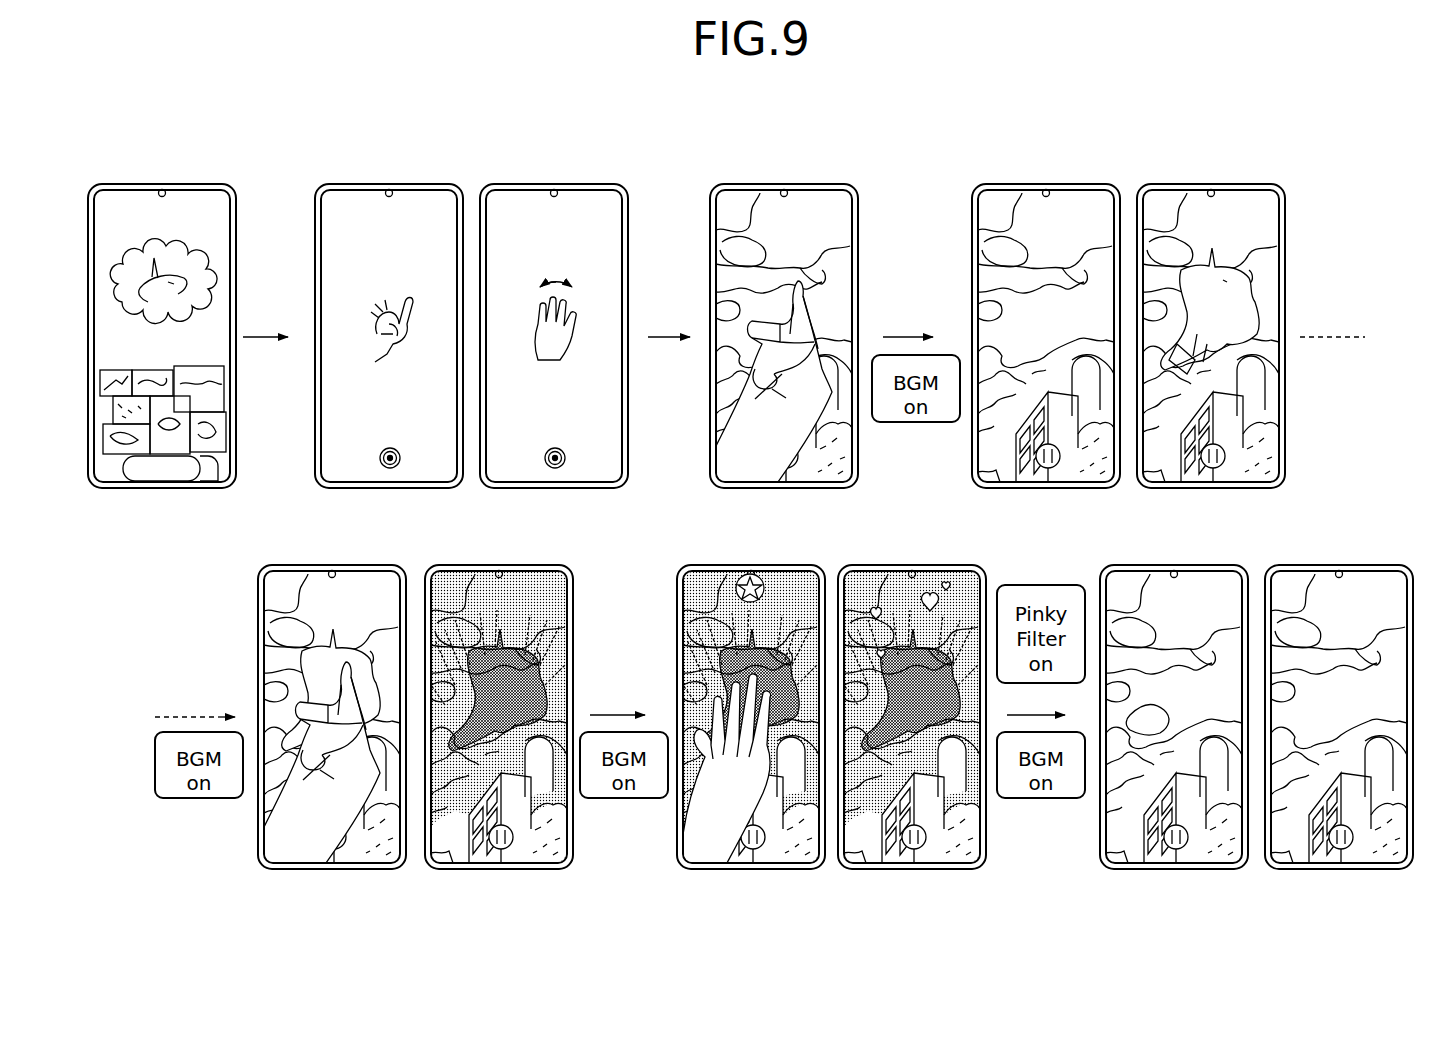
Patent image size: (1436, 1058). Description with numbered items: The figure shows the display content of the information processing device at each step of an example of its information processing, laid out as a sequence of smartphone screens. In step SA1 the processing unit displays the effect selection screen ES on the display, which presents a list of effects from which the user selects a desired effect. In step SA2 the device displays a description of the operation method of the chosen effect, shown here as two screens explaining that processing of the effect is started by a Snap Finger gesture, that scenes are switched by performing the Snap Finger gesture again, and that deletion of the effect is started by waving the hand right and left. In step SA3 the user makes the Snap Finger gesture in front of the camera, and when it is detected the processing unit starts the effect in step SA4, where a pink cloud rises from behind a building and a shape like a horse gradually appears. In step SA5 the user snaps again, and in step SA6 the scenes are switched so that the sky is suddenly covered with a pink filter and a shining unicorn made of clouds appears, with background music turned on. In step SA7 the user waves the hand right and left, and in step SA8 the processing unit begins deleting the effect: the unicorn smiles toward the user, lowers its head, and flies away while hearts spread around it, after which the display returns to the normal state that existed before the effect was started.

The step of displaying effect selection screen SA1 is at (138, 148).
The step of displaying operation method description SA2 is at (632, 160).
The step of making Snap Finger gesture SA3 is at (763, 148).
The step of starting effect processing SA4 is at (972, 160).
The step of making Snap Finger gesture again SA5 is at (311, 928).
The step of switching effect scenes SA6 is at (476, 928).
The step of waving hand gesture SA7 is at (728, 928).
The step of deleting effect SA8 is at (838, 885).
The effect selection screen ES is at (218, 458).